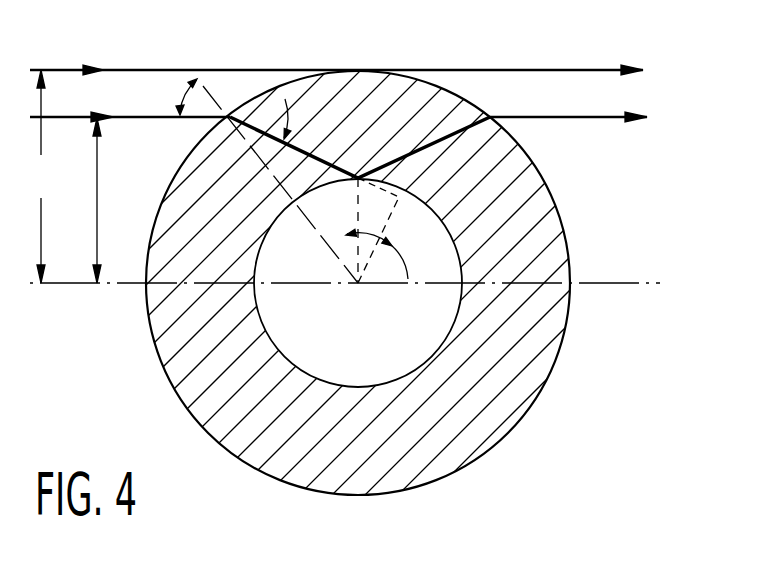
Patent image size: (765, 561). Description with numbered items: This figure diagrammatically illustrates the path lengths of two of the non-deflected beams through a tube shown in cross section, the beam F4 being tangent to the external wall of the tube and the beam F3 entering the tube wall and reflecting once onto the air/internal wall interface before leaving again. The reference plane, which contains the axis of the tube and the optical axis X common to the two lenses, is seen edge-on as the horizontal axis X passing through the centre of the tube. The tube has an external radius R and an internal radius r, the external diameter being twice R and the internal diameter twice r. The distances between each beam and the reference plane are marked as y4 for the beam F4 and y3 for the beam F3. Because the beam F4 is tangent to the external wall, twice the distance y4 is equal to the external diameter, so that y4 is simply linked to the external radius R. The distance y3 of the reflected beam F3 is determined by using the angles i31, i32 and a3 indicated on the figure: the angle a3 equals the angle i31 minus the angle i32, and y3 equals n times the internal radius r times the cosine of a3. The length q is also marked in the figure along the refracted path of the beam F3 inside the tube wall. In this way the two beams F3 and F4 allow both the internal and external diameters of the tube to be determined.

The beam F4 is at (612, 68).
The beam F3 is at (617, 120).
The optical axis X is at (638, 285).
The external radius R is at (269, 170).
The internal radius r is at (358, 225).
The distance q is at (381, 238).
The angle a3 is at (393, 252).
The angle i31 is at (157, 95).
The angle i32 is at (329, 124).
The distance y3 is at (116, 200).
The distance y4 is at (34, 176).